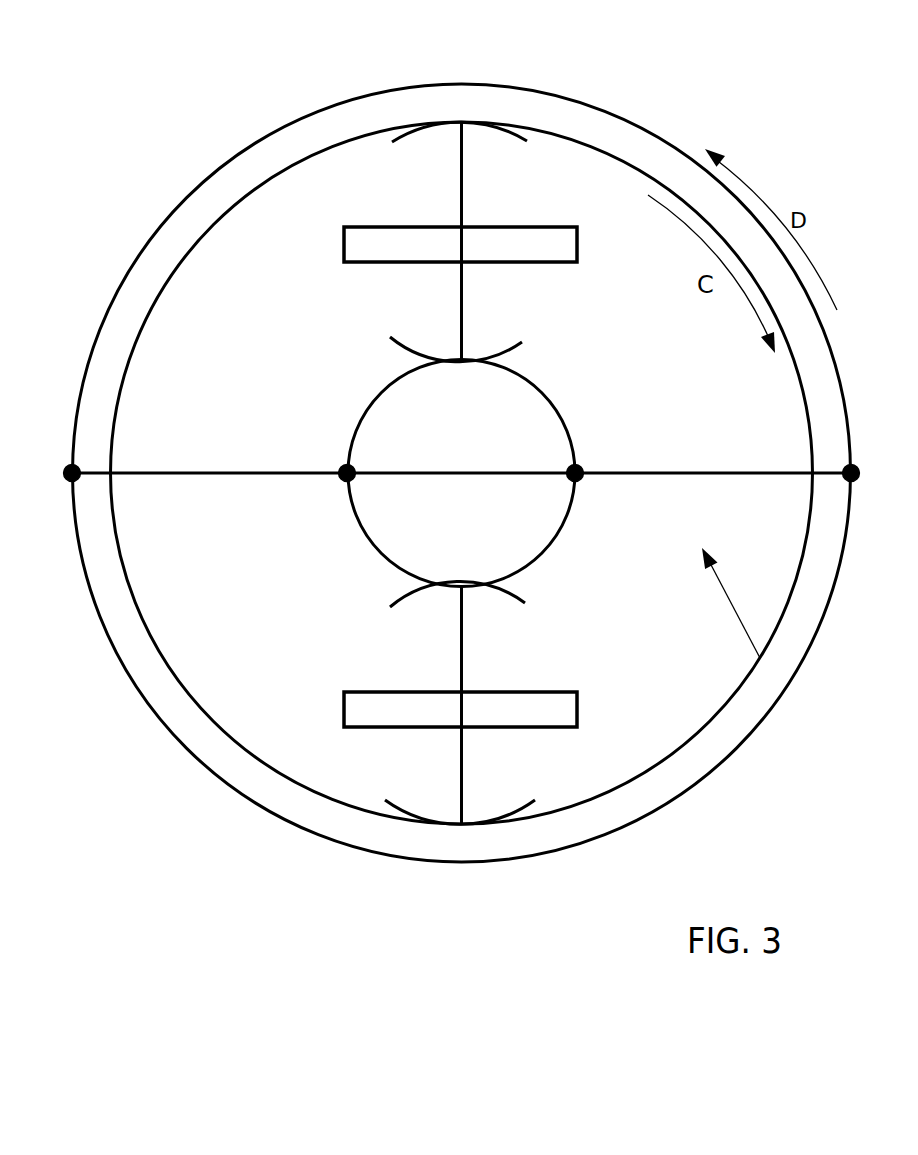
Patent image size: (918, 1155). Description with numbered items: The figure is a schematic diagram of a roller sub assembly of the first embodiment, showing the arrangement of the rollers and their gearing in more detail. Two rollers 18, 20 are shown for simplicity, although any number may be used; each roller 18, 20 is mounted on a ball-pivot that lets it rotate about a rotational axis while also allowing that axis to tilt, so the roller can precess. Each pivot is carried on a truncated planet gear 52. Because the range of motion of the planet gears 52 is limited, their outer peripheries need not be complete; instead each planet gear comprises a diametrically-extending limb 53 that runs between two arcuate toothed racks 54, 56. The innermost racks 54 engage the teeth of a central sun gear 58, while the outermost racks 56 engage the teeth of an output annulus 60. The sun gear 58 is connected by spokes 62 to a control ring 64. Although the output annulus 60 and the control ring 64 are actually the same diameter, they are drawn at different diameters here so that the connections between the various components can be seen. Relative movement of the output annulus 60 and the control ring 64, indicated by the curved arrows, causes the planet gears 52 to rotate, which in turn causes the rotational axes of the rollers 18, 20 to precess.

The roller 18 is at (556, 252).
The roller 20 is at (555, 701).
The truncated planet gear 52 is at (368, 289).
The diametrically-extending limb 53 is at (458, 222).
The arcuate toothed rack 54 is at (510, 346).
The arcuate toothed rack 56 is at (520, 138).
The sun gear 58 is at (478, 491).
The output annulus 60 is at (623, 782).
The spokes 62 is at (205, 470).
The control ring 64 is at (728, 748).